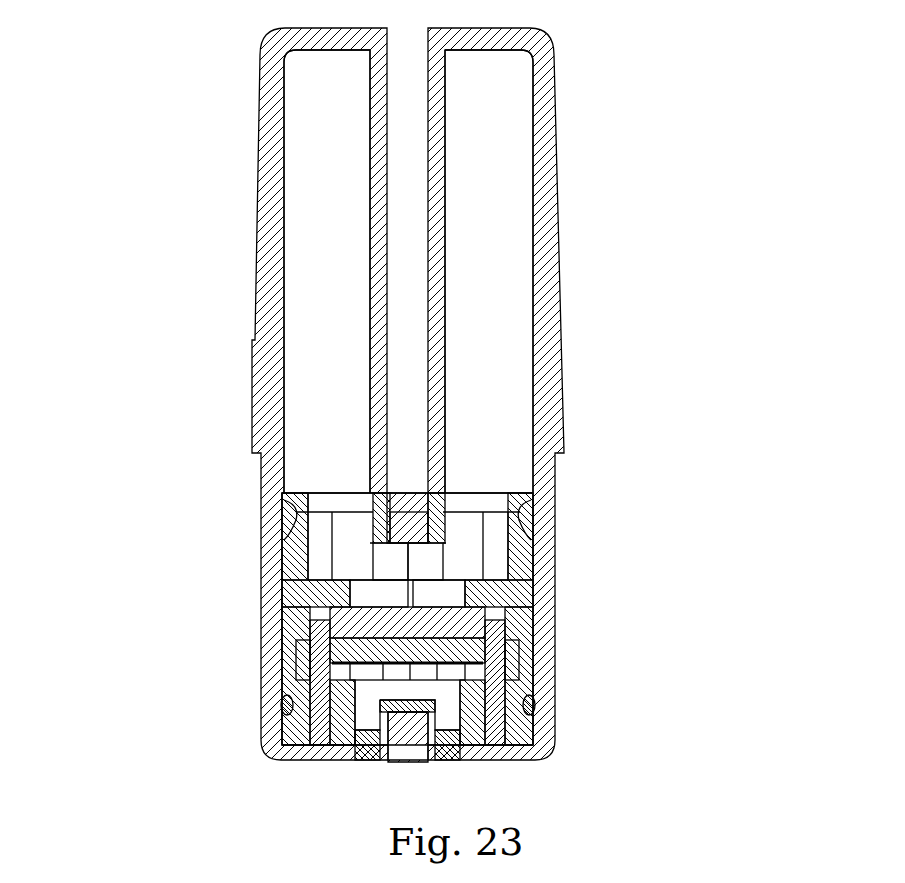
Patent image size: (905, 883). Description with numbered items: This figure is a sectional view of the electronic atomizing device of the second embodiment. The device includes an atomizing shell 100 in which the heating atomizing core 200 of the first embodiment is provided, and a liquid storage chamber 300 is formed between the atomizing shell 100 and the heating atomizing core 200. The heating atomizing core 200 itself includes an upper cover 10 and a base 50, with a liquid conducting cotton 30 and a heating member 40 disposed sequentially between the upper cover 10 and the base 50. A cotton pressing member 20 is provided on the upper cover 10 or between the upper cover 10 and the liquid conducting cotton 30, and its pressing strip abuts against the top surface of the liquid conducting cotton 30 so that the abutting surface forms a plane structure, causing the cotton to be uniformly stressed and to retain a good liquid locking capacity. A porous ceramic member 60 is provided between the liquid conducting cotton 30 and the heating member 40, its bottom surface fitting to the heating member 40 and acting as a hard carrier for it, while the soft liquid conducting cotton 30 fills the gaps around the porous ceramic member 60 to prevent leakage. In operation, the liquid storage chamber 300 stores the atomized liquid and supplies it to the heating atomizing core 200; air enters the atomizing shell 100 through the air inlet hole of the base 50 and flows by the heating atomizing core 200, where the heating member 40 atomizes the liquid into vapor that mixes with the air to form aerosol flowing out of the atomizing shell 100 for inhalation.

The atomizing shell 100 is at (612, 216).
The liquid storage chamber 300 is at (548, 364).
The heating atomizing core 200 is at (231, 483).
The upper cover 10 is at (520, 540).
The cotton pressing member 20 is at (360, 575).
The liquid conducting cotton 30 is at (463, 610).
The heating member 40 is at (497, 660).
The porous ceramic member 60 is at (320, 635).
The base 50 is at (533, 730).